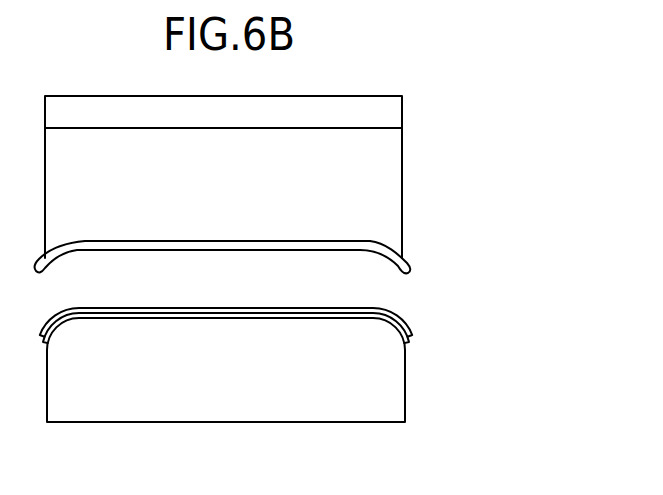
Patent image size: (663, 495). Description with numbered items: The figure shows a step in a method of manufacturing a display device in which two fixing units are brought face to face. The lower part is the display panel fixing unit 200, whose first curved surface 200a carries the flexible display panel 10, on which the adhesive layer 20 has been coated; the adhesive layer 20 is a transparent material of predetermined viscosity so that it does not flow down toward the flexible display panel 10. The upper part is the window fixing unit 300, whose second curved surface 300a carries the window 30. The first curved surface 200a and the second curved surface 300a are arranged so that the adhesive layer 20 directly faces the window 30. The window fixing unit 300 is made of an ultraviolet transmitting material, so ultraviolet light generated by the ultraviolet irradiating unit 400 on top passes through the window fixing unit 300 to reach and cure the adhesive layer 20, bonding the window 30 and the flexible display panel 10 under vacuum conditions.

The flexible display panel 10 is at (397, 320).
The adhesive layer 20 is at (373, 310).
The window 30 is at (385, 250).
The display panel fixing unit 200 is at (388, 380).
The first curved surface 200a is at (317, 318).
The window fixing unit 300 is at (387, 163).
The second curved surface 300a is at (333, 240).
The ultraviolet irradiating unit 400 is at (387, 112).